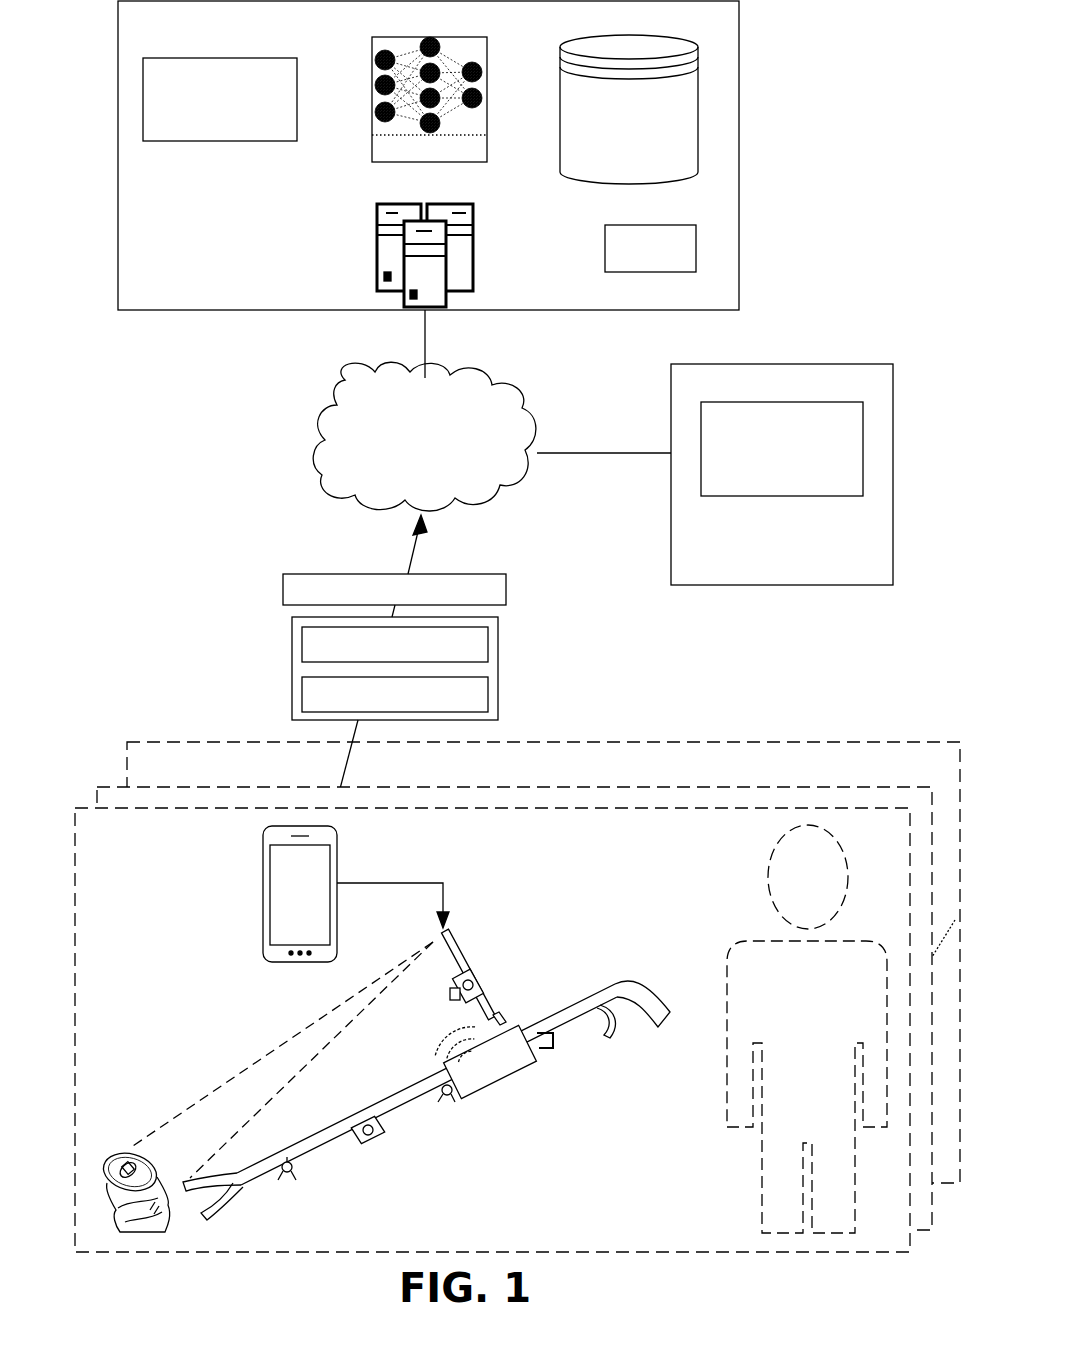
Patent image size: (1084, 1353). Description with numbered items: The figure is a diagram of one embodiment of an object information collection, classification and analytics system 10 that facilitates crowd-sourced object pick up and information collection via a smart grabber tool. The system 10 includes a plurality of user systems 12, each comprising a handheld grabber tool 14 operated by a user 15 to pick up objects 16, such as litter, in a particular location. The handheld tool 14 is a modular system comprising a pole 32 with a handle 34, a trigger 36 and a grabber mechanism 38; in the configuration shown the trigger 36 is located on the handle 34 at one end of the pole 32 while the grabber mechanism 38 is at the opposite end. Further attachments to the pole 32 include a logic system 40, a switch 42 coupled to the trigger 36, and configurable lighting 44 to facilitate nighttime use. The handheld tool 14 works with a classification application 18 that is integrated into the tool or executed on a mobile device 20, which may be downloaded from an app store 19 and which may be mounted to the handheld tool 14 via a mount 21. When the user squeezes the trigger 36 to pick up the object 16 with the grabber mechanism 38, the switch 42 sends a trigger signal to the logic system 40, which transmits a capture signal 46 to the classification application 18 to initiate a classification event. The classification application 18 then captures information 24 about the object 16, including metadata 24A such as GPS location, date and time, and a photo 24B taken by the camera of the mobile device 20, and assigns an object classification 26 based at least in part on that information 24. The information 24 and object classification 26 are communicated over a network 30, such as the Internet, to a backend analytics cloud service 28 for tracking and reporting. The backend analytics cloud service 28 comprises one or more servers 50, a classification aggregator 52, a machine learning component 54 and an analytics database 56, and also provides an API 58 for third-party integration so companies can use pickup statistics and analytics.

The object information collection, classification and analytics system 10 is at (459, 155).
The user system 12 is at (75, 808).
The handheld grabber tool 14 is at (571, 935).
The user 15 is at (750, 941).
The object 16 is at (128, 1152).
The classification application 18 is at (782, 449).
The app store 19 is at (782, 474).
The mobile device 20 is at (270, 885).
The mount 21 is at (478, 985).
The information 24 is at (356, 668).
The metadata 24A is at (395, 644).
The photo 24B is at (292, 668).
The object classification 26 is at (283, 590).
The backend analytics cloud service 28 is at (428, 155).
The network 30 is at (424, 436).
The pole 32 is at (376, 1110).
The handle 34 is at (632, 980).
The trigger 36 is at (613, 1038).
The grabber mechanism 38 is at (232, 1200).
The logic system 40 is at (492, 1085).
The switch 42 is at (556, 1042).
The configurable lighting 44 is at (340, 1150).
The capture signal 46 is at (432, 1053).
The servers 50 is at (474, 257).
The classification aggregator 52 is at (220, 99).
The machine learning component 54 is at (429, 99).
The analytics database 56 is at (629, 109).
The API 58 is at (650, 248).